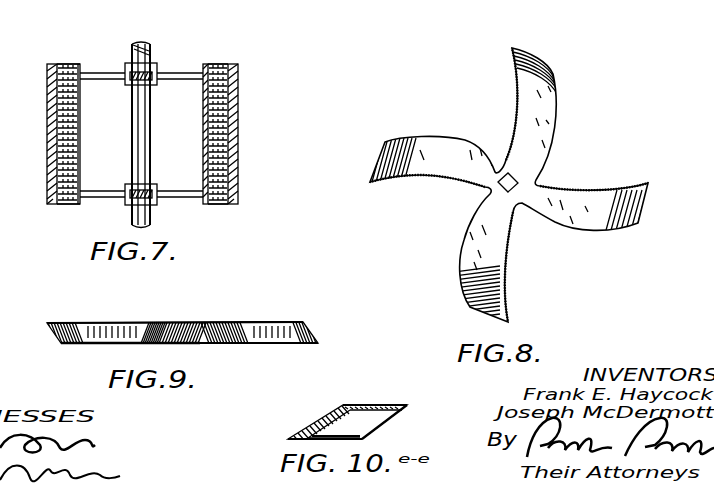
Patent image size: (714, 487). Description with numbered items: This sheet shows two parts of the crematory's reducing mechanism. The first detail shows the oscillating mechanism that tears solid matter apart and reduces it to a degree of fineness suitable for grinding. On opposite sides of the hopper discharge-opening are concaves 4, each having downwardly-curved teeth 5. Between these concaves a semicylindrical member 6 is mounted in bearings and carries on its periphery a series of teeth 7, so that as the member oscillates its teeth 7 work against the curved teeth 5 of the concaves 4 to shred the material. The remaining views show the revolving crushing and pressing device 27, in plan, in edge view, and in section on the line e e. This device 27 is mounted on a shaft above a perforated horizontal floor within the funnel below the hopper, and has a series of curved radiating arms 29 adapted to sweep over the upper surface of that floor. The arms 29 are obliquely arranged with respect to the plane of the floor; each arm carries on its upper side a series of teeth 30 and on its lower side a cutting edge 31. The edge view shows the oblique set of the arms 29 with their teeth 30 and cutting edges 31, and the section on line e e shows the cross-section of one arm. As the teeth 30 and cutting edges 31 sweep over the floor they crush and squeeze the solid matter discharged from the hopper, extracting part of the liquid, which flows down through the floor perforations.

In FIG. 7, the concaves 4 is at (48, 131).
In FIG. 7, the downwardly-curved teeth 5 is at (63, 203).
In FIG. 7, the semicylindrical member 6 is at (80, 102).
In FIG. 7, the teeth 7 is at (65, 71).
In FIG. 8, the revolving crushing and pressing device 27 is at (537, 175).
In FIG. 8, the curved radiating arms 29 is at (533, 73).
In FIG. 9, the curved radiating arms 29 is at (182, 323).
In FIG. 10, the curved radiating arms 29 is at (373, 415).
In FIG. 8, the teeth 30 is at (500, 287).
In FIG. 9, the teeth 30 is at (77, 323).
In FIG. 10, the teeth 30 is at (388, 404).
In FIG. 9, the cutting edge 31 is at (87, 343).
In FIG. 10, the cutting edge 31 is at (363, 436).
In FIG. 8, the section line e e is at (522, 256).